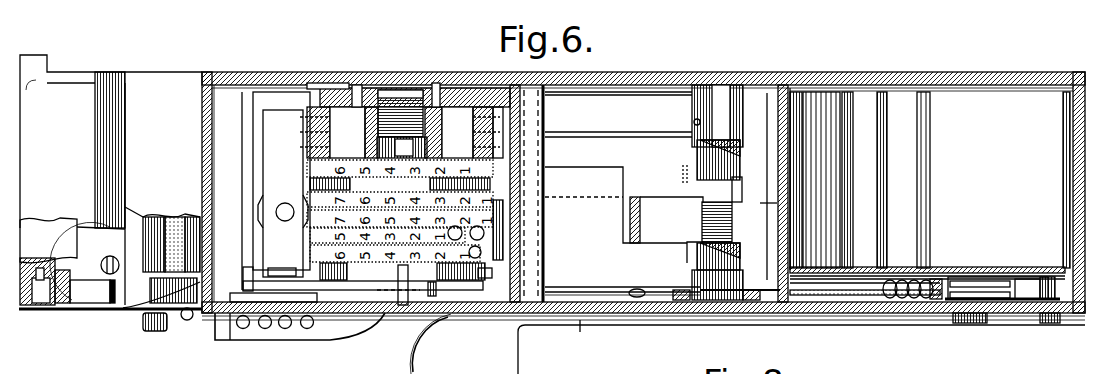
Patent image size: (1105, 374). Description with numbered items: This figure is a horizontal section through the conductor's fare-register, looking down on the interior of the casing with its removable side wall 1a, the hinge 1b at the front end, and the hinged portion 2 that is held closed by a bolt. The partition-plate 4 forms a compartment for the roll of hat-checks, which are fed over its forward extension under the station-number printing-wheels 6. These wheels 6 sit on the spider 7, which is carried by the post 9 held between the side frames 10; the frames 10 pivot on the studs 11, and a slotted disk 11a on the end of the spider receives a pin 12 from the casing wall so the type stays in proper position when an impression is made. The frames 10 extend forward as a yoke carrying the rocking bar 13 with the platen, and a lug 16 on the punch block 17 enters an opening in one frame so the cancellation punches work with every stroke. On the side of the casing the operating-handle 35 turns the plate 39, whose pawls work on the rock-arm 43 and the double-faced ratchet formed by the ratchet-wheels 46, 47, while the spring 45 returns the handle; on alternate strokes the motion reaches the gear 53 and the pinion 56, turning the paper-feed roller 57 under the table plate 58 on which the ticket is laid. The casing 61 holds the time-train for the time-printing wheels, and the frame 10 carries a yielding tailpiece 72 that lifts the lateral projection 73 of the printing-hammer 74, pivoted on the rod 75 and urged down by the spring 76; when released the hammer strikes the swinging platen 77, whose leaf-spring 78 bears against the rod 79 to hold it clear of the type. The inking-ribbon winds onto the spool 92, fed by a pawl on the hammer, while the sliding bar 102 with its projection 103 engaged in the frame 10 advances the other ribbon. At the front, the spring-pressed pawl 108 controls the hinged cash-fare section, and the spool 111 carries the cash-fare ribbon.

The removable side wall of casing 1a is at (228, 72).
The hinge of casing front end 1b is at (280, 336).
The hinged portion 2 is at (1077, 185).
The partition-plate 4 is at (762, 186).
The printing-wheels 6 is at (495, 245).
The spider 7 is at (443, 147).
The post 9 is at (402, 146).
The side frames 10 is at (318, 102).
The studs 11 is at (435, 85).
The slotted disk 11a is at (483, 273).
The pin 12 is at (405, 283).
The rocking bar 13 is at (281, 184).
The lug 16 is at (272, 275).
The block 17 is at (240, 298).
The operating-handle 35 is at (578, 339).
The plate 39 is at (988, 273).
The rock-arm 43 is at (1035, 280).
The spring 45 is at (910, 298).
The ratchet-wheel 46 is at (1058, 315).
The ratchet-wheel 47 is at (1037, 299).
The gear 53 is at (840, 295).
The pinion 56 is at (172, 290).
The paper-feed roller 57 is at (167, 230).
The plate 58 is at (132, 150).
The casing of time-train 61 is at (640, 224).
The yielding tailpiece 72 is at (610, 294).
The lateral projection 73 is at (641, 295).
The printing-hammer 74 is at (616, 204).
The rod 75 is at (735, 178).
The spring 76 is at (733, 229).
The swinging platen 77 is at (687, 127).
The leaf-spring 78 is at (603, 130).
The rod 79 is at (524, 148).
The spool 92 is at (693, 142).
The sliding bar 102 is at (348, 85).
The projection 103 is at (353, 104).
The spring-pressed pawl 108 is at (90, 293).
The spool 111 is at (93, 243).